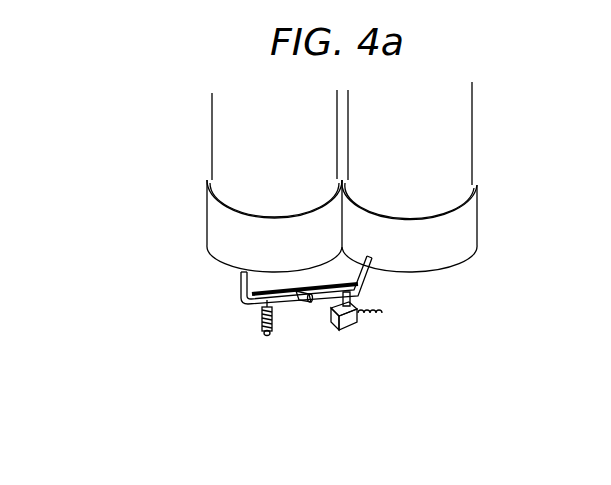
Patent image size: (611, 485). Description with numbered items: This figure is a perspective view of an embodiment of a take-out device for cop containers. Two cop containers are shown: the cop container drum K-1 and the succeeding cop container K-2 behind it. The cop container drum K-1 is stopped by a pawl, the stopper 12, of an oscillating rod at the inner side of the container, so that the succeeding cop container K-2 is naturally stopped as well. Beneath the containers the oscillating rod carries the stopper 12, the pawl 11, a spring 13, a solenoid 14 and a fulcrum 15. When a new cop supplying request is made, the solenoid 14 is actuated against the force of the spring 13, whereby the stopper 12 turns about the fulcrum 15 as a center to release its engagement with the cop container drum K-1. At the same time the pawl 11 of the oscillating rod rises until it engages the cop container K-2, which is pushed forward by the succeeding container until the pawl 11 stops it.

The cop container drum K-1 is at (465, 132).
The succeeding cop container K-2 is at (216, 160).
The pawl of the oscillating rod 11 is at (240, 299).
The stopper 12 is at (368, 262).
The spring 13 is at (261, 319).
The solenoid 14 is at (333, 327).
The fulcrum 15 is at (303, 304).